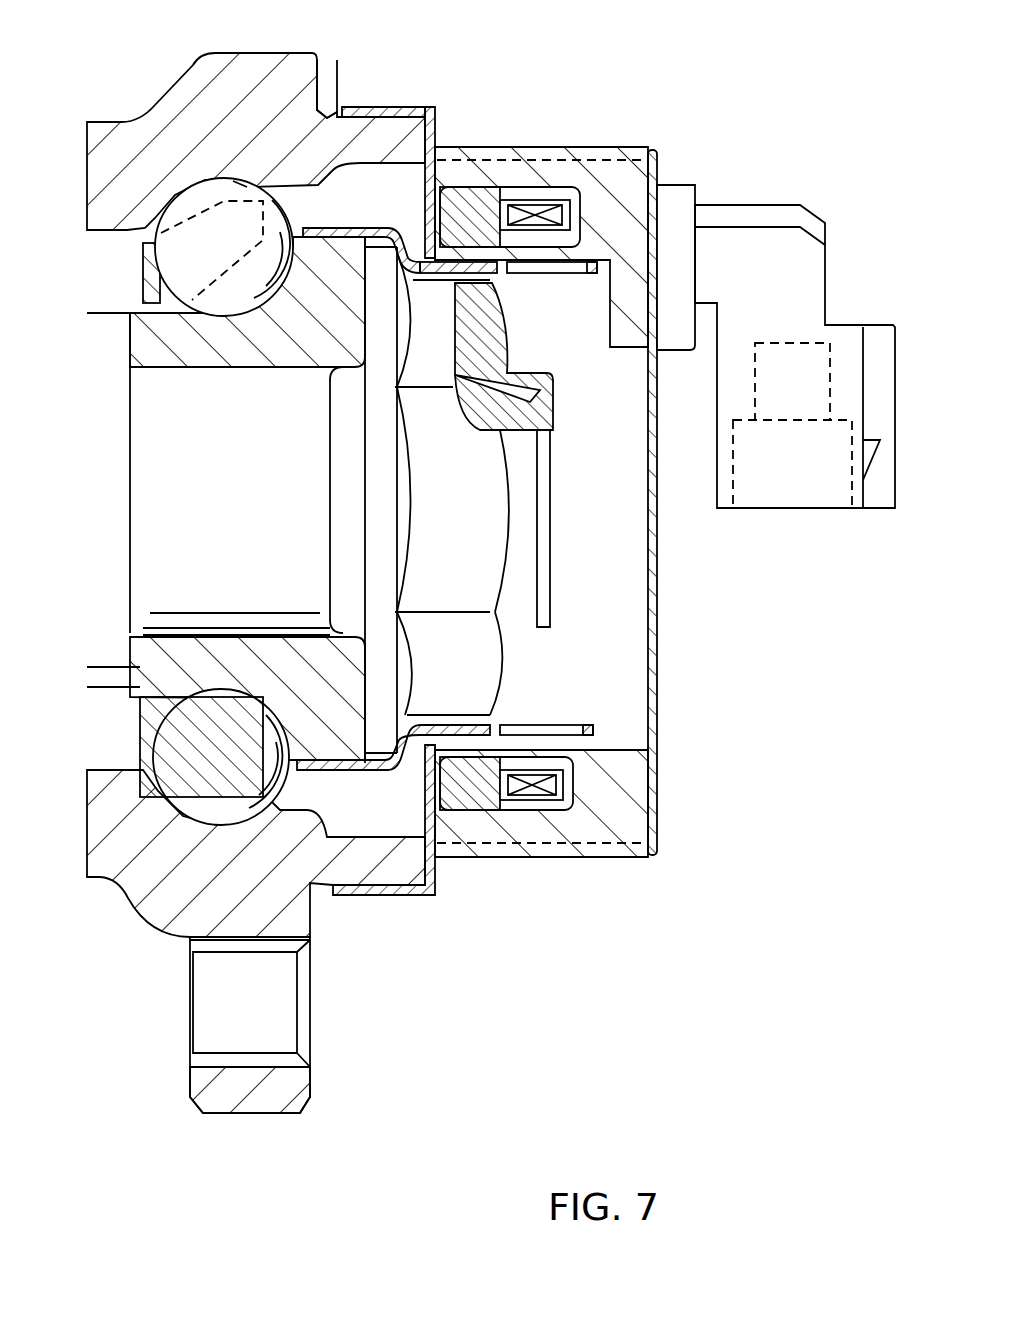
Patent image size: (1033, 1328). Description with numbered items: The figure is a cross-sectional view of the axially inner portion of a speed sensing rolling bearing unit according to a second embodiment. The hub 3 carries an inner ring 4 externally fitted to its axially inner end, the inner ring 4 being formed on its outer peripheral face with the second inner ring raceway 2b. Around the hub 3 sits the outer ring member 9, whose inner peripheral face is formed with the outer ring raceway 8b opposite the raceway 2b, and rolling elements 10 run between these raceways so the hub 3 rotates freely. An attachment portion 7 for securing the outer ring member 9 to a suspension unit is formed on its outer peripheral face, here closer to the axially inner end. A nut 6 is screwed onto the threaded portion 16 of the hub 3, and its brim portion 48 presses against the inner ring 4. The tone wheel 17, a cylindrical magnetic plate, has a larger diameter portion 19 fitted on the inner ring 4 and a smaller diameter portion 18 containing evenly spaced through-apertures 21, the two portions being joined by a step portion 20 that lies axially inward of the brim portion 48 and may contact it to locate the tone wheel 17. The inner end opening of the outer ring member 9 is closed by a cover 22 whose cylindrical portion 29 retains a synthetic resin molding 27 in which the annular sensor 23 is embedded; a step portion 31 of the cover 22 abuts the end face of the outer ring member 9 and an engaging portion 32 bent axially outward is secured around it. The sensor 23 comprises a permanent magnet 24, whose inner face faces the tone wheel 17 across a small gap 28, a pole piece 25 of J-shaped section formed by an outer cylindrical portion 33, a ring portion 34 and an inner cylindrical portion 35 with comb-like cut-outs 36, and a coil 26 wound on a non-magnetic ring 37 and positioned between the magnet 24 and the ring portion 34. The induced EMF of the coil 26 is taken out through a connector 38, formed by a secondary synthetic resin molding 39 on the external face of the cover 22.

The second inner ring raceway 2b is at (220, 693).
The hub 3 is at (140, 600).
The inner ring 4 is at (240, 353).
The nut 6 is at (460, 657).
The attachment portion 7 is at (280, 1100).
The outer ring raceway 8b is at (250, 187).
The outer ring member 9 is at (197, 90).
The rolling elements 10 is at (202, 193).
The threaded portion 16 is at (347, 562).
The tone wheel 17 is at (457, 266).
The smaller diameter portion 18 is at (432, 747).
The larger diameter portion 19 is at (347, 233).
The step portion 20 is at (410, 765).
The through-apertures 21 is at (560, 276).
The cover 22 is at (555, 170).
The sensor 23 is at (472, 203).
The permanent magnet 24 is at (447, 792).
The pole piece 25 is at (595, 150).
The coil 26 is at (580, 850).
The synthetic resin molding 27 is at (615, 183).
The small gap 28 is at (483, 740).
The cylindrical portion 29 is at (535, 195).
The step portion 31 is at (440, 148).
The engaging portion 32 is at (383, 108).
The outer cylindrical portion 33 is at (540, 800).
The ring portion 34 is at (573, 217).
The inner cylindrical portion 35 is at (537, 248).
The cut-outs 36 is at (633, 853).
The ring 37 is at (573, 773).
The connector 38 is at (810, 270).
The synthetic resin molding 39 is at (813, 387).
The brim portion 48 is at (400, 707).